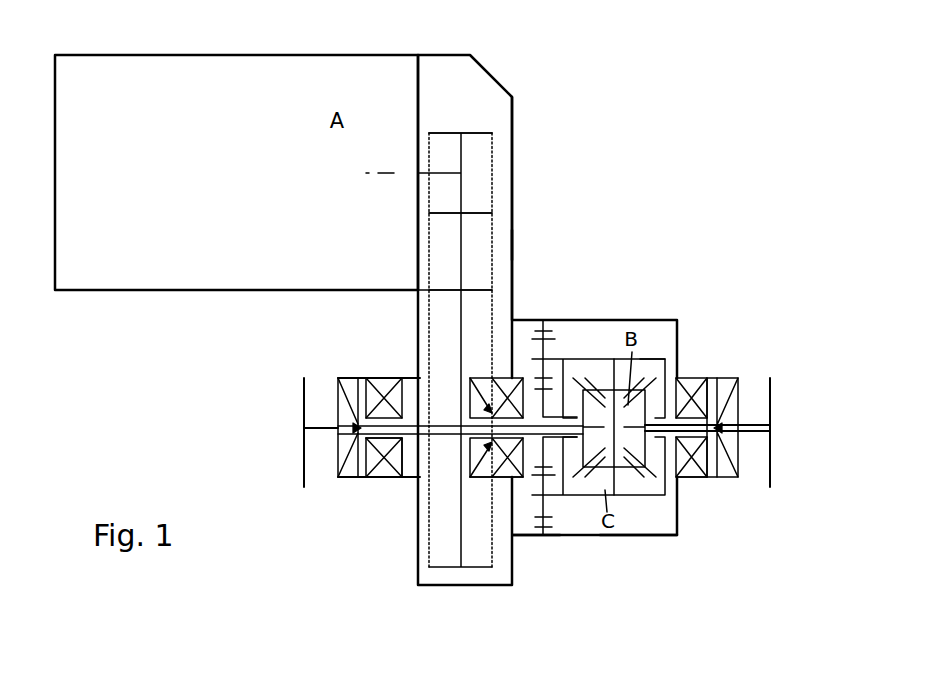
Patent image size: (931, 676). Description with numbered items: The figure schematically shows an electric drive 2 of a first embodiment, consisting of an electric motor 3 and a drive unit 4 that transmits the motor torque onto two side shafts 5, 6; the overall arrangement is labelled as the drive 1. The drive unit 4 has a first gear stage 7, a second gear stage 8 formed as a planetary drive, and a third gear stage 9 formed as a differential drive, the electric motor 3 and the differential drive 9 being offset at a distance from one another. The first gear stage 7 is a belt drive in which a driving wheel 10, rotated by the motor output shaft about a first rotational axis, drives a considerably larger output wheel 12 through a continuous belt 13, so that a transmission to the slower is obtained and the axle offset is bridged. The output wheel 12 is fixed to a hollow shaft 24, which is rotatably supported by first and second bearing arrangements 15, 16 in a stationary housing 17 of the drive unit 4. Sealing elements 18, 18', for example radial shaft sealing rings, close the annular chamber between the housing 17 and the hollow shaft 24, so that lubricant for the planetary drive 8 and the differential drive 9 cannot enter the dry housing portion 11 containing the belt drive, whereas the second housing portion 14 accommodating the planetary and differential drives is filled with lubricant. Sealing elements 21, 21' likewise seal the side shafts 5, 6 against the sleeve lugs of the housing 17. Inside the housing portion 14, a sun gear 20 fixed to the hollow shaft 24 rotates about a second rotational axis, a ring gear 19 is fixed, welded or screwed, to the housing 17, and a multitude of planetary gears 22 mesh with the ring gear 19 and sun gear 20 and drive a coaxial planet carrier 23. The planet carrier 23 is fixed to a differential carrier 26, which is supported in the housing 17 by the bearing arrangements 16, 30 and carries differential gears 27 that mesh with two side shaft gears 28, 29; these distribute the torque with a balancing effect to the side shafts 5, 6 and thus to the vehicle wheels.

The drive train 1 is at (347, 178).
The electric drive 2 is at (650, 106).
The electric motor 3 is at (215, 178).
The drive unit 4 is at (531, 72).
The side shaft 5 is at (757, 435).
The side shaft 6 is at (316, 434).
The first gear stage 7 is at (456, 98).
The second gear stage 8 is at (549, 558).
The third gear stage 9 is at (663, 522).
The driving wheel 10 is at (481, 131).
The housing portion 11 is at (514, 246).
The output wheel 12 is at (481, 290).
The continuous belt 13 is at (481, 229).
The second housing portion 14 is at (652, 319).
The first bearing arrangement 15 is at (398, 410).
The second bearing arrangement 16 is at (522, 482).
The stationary housing 17 is at (522, 170).
The sealing element 18 is at (489, 505).
The sealing element 18' is at (373, 513).
The ring gear 19 is at (549, 333).
The sun gear 20 is at (565, 480).
The sealing element 21 is at (748, 406).
The sealing element 21' is at (334, 398).
The planetary gears 22 is at (553, 358).
The planet carrier 23 is at (583, 357).
The hollow shaft 24 is at (440, 440).
The differential carrier 26 is at (655, 354).
The differential gears 27 is at (628, 473).
The side shaft gear 28 is at (678, 372).
The side shaft gear 29 is at (590, 455).
The bearing arrangement 30 is at (694, 480).